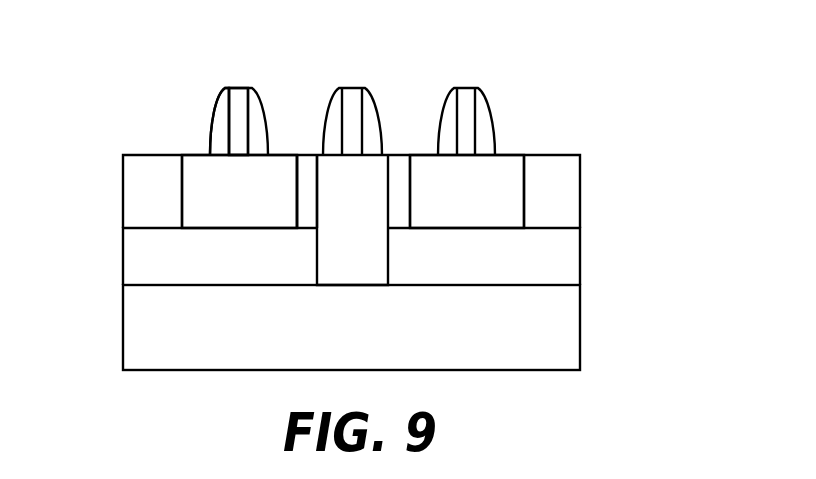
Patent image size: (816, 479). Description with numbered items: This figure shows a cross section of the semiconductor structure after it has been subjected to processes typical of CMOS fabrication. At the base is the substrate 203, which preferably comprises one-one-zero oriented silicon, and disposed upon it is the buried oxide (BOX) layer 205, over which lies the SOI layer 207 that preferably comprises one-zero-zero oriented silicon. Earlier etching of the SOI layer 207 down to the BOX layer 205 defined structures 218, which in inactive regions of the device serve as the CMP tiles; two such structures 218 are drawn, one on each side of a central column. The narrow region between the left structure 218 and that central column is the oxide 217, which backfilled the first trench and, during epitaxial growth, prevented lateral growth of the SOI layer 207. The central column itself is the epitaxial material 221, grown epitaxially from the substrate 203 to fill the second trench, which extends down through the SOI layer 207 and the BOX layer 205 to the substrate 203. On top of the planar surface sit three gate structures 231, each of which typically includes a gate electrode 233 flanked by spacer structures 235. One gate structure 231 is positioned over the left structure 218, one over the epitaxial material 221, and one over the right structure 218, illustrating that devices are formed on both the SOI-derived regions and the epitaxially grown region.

The substrate 203 is at (123, 327).
The buried oxide (BOX) layer 205 is at (123, 258).
The SOI layer 207 is at (181, 194).
The oxide 217 is at (307, 155).
The structures 218 is at (220, 205).
The epitaxial material 221 is at (332, 205).
The gate structures 231 is at (505, 115).
The gate electrode 233 is at (232, 88).
The spacer structures 235 is at (213, 130).